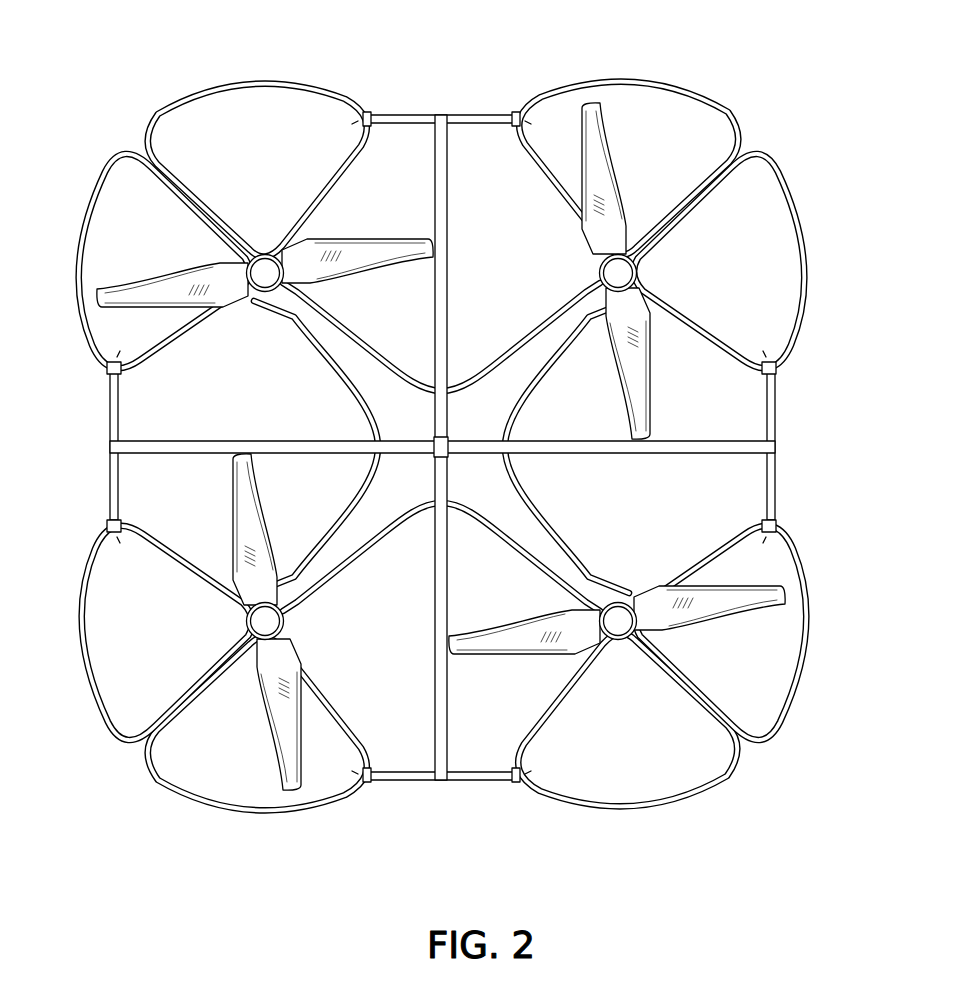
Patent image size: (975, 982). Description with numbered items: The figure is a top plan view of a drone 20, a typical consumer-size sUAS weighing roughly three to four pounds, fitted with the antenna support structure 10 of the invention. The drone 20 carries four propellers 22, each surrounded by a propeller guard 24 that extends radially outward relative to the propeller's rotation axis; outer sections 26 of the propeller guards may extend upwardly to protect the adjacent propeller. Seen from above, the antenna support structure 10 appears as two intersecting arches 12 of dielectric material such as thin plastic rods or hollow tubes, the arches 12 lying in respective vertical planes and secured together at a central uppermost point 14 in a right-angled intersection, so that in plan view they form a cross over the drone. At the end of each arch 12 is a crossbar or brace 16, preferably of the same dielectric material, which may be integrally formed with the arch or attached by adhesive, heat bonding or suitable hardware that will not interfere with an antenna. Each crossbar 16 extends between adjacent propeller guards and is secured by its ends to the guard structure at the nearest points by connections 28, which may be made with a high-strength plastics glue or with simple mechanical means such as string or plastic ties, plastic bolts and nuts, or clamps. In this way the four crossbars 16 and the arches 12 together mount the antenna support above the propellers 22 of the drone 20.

The antenna support structure 10 is at (453, 441).
The arch 12 is at (442, 447).
The central uppermost point 14 is at (450, 437).
The crossbar 16 is at (423, 113).
The drone 20 is at (454, 441).
The propeller 22 is at (370, 243).
The propeller guard 24 is at (454, 446).
The outer section of propeller guard 26 is at (211, 85).
The connection 28 is at (366, 112).